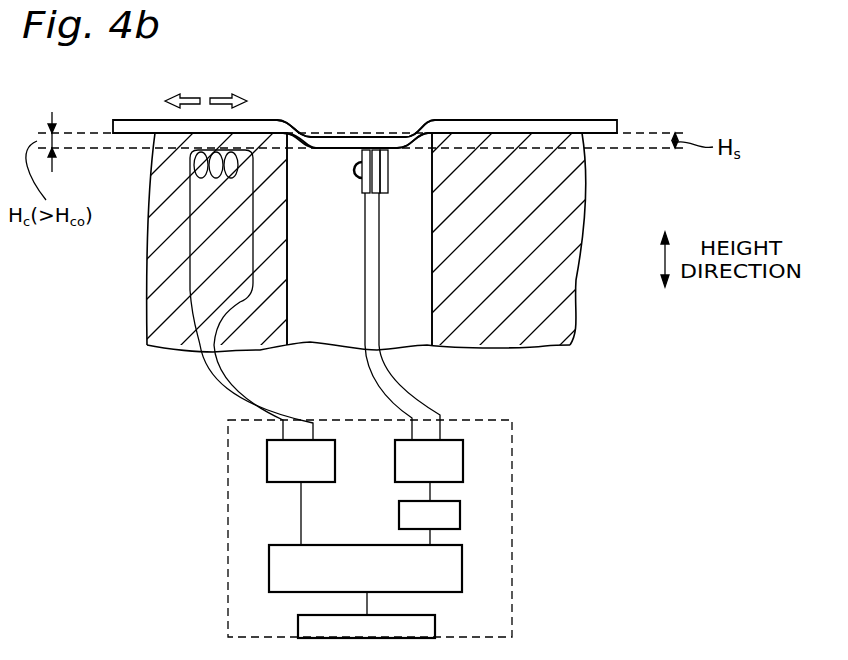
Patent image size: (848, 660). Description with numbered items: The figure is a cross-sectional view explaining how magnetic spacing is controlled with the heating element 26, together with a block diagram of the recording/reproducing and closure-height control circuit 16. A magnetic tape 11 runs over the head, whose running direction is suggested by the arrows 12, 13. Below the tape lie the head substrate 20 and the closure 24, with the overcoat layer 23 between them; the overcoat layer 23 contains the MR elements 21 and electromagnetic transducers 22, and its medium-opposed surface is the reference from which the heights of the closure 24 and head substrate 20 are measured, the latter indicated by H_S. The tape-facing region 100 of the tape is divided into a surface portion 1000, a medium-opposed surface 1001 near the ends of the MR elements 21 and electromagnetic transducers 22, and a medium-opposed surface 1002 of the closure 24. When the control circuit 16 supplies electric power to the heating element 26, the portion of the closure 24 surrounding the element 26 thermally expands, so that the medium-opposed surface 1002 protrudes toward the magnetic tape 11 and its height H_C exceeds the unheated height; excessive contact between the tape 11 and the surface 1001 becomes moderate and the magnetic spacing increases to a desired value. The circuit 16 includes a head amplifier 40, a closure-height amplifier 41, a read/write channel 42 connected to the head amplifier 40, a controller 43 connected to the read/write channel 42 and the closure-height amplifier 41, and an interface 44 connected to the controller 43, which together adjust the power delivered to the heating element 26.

The magnetic tape 11 is at (533, 127).
The movement direction arrow 12 is at (180, 97).
The movement direction arrow 13 is at (222, 97).
The head protrusion portion 100 is at (487, 70).
The slider surface portion 1000 is at (458, 130).
The medium-opposed surface 1001 is at (320, 148).
The medium-opposed surface 1002 is at (270, 130).
The head substrate 20 is at (562, 260).
The MR element 21 is at (383, 147).
The electromagnetic transducer 22 is at (366, 148).
The overcoat layer 23 is at (405, 335).
The closure 24 is at (153, 300).
The heating element 26 is at (180, 207).
The recording/reproducing and closure-height control circuit 16 is at (500, 487).
The head amplifier 40 is at (458, 462).
The closure-height amplifier 41 is at (277, 458).
The read/write (R/W) channel 42 is at (460, 515).
The controller 43 is at (455, 572).
The interface 44 is at (435, 627).